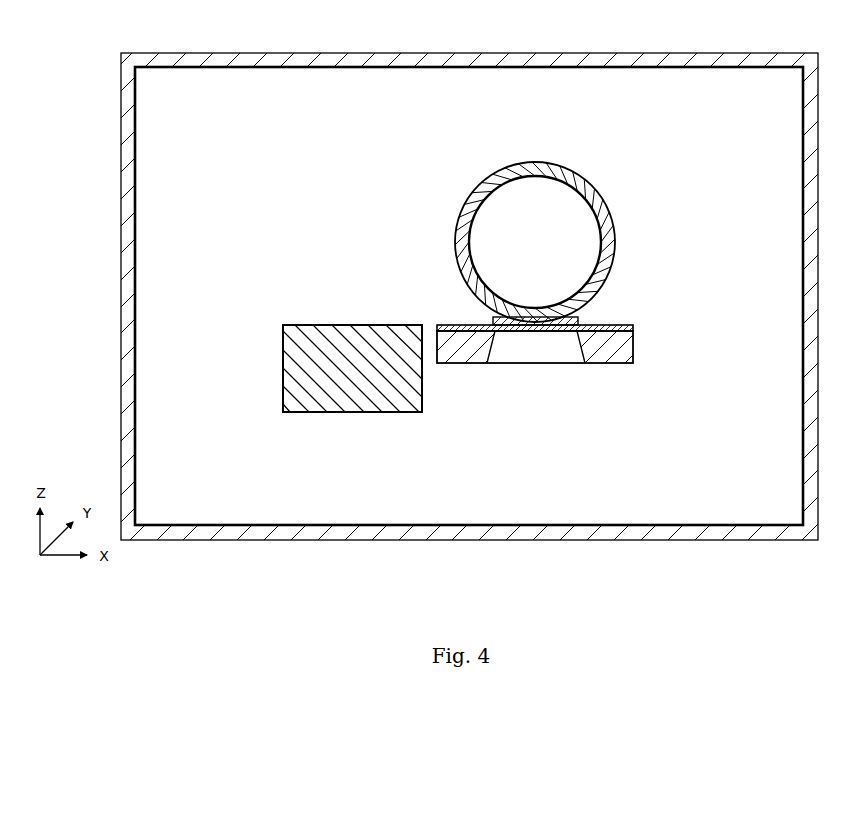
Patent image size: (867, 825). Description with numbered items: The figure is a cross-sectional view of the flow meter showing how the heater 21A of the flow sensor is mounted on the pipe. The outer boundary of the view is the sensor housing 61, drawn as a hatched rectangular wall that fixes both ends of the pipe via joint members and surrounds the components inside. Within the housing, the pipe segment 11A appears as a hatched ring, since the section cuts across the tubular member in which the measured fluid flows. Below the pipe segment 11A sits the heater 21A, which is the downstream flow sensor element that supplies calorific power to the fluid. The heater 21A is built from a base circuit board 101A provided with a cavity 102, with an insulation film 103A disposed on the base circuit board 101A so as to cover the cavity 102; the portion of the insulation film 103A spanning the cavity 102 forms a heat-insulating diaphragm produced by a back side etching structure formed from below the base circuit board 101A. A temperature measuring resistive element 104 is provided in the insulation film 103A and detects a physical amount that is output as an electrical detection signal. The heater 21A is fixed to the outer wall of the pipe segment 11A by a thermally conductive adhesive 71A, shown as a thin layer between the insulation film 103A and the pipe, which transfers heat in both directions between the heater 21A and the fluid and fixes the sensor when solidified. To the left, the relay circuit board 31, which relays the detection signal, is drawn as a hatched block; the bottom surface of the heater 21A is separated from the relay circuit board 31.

The sensor housing 61 is at (730, 53).
The relay circuit board 31 is at (358, 325).
The pipe segment 11A is at (596, 193).
The thermally conductive adhesive 71A is at (581, 318).
The insulation film 103A is at (634, 325).
The base circuit board 101A is at (612, 364).
The cavity 102 is at (508, 357).
The temperature measuring resistive element 104 is at (535, 333).
The heater 21A is at (567, 345).